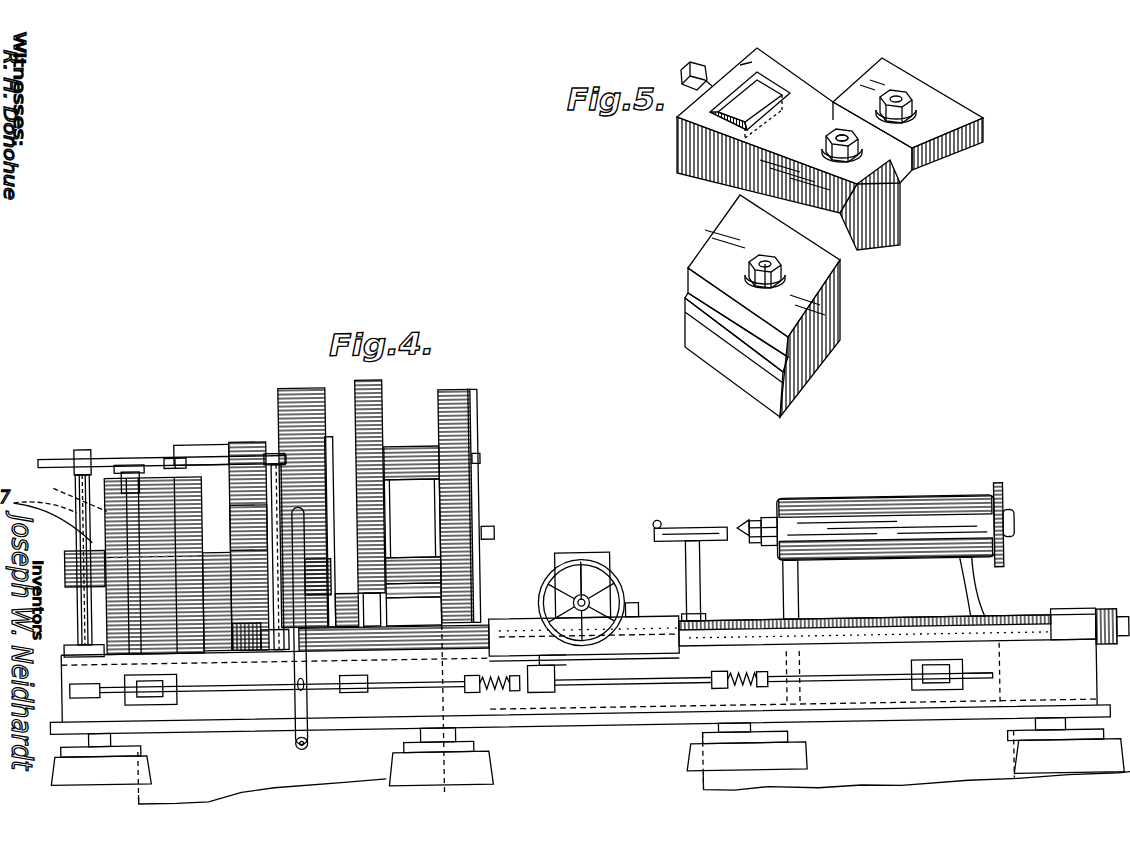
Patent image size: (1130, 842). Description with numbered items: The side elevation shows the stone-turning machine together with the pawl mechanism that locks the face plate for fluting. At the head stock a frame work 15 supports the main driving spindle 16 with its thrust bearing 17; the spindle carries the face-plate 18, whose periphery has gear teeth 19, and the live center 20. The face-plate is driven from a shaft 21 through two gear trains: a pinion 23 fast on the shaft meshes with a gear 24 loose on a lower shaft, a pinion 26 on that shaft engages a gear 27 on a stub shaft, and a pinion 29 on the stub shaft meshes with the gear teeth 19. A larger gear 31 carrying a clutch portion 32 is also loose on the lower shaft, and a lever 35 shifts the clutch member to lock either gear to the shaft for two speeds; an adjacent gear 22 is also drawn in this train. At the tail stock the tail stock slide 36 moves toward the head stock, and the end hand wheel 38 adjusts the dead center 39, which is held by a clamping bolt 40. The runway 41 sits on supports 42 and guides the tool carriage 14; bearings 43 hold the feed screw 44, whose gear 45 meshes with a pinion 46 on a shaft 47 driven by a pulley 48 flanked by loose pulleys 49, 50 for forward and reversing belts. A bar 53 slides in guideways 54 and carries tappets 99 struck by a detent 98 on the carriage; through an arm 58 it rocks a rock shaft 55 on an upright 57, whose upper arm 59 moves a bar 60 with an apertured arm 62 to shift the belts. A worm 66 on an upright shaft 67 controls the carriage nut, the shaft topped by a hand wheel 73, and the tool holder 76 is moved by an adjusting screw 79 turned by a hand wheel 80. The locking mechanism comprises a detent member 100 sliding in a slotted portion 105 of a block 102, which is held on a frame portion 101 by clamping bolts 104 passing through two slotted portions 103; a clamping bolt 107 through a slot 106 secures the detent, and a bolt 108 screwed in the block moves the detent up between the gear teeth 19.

In FIG. 4, the tool carriage 14 is at (515, 618).
In FIG. 4, the frame work 15 is at (410, 444).
In FIG. 4, the main driving spindle 16 is at (228, 451).
In FIG. 4, the thrust bearing 17 is at (60, 492).
In FIG. 4, the face-plate 18 is at (482, 418).
In FIG. 4, the gear teeth 19 is at (462, 388).
In FIG. 4, the live center 20 is at (497, 530).
In FIG. 4, the shaft 21 is at (278, 449).
In FIG. 4, the gear 22 is at (315, 384).
In FIG. 4, the pinion 23 is at (252, 437).
In FIG. 4, the gear 24 is at (245, 512).
In FIG. 4, the pinion 26 is at (413, 574).
In FIG. 4, the gear 27 is at (385, 416).
In FIG. 4, the pinion 29 is at (484, 456).
In FIG. 4, the gear 31 is at (352, 603).
In FIG. 4, the clutch portion 32 is at (318, 584).
In FIG. 4, the lever 35 is at (412, 518).
In FIG. 4, the tail stock slide 36 is at (982, 586).
In FIG. 4, the end hand wheel 38 is at (1005, 500).
In FIG. 4, the dead center 39 is at (742, 524).
In FIG. 4, the clamping bolt 40 is at (308, 703).
In FIG. 4, the runway 41 is at (1075, 690).
In FIG. 4, the supports 42 is at (120, 747).
In FIG. 4, the bearings 43 is at (1075, 617).
In FIG. 4, the feed screw 44 is at (752, 623).
In FIG. 4, the gear 45 is at (215, 690).
In FIG. 4, the pinion 46 is at (218, 547).
In FIG. 4, the shaft 47 is at (75, 515).
In FIG. 4, the pulley 48 is at (150, 585).
In FIG. 4, the loose pulley 49 is at (135, 458).
In FIG. 4, the loose pulley 50 is at (190, 452).
In FIG. 4, the bar 53 is at (620, 686).
In FIG. 4, the guideways 54 is at (82, 690).
In FIG. 4, the rock shaft 55 is at (72, 535).
In FIG. 4, the upright 57 is at (72, 582).
In FIG. 4, the arm 58 is at (95, 672).
In FIG. 4, the arm 59 is at (88, 442).
In FIG. 4, the bar 60 is at (76, 450).
In FIG. 4, the apertured arm 62 is at (140, 465).
In FIG. 4, the worm 66 is at (686, 616).
In FIG. 4, the upright shaft 67 is at (702, 578).
In FIG. 4, the tool rest 73 is at (712, 530).
In FIG. 4, the tool holder 76 is at (565, 556).
In FIG. 4, the adjusting screw 79 is at (595, 565).
In FIG. 4, the hand wheel 80 is at (555, 585).
In FIG. 4, the detent 98 is at (545, 692).
In FIG. 4, the tappets 99 is at (470, 691).
In FIG. 5, the detent member 100 is at (905, 190).
In FIG. 5, the portion of the frame 101 is at (835, 260).
In FIG. 5, the block 102 is at (790, 318).
In FIG. 5, the slotted portions 103 is at (905, 98).
In FIG. 5, the clamping bolts 104 is at (745, 272).
In FIG. 5, the slotted portion 105 is at (760, 92).
In FIG. 5, the slot 106 is at (826, 134).
In FIG. 5, the clamping bolt 107 is at (845, 134).
In FIG. 5, the bolt 108 is at (698, 68).